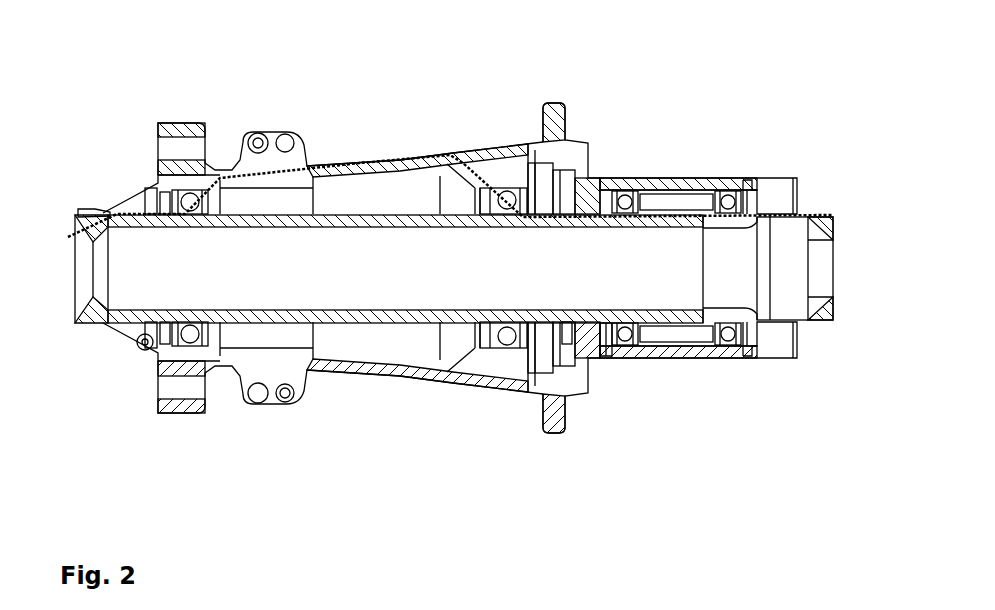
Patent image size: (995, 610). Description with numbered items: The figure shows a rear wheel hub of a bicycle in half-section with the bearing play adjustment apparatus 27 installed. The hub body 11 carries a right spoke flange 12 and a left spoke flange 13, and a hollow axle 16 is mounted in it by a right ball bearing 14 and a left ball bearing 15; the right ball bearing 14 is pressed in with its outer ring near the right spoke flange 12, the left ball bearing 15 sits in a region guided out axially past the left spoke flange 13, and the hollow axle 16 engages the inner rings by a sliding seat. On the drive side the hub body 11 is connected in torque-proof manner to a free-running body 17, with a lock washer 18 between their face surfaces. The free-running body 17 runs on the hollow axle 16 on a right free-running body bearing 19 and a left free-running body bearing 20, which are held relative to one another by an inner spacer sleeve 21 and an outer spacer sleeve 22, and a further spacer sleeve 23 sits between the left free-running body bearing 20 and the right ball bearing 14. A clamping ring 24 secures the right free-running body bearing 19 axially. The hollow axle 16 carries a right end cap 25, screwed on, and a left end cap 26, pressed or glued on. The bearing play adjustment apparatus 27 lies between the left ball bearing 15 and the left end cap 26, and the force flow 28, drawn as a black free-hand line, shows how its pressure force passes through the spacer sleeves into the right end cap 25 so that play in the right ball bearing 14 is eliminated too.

The hub body 11 is at (503, 152).
The right spoke flange 12 is at (553, 118).
The left spoke flange 13 is at (273, 133).
The right ball bearing 14 is at (504, 345).
The left ball bearing 15 is at (193, 345).
The hollow axle 16 is at (380, 318).
The free-running body 17 is at (695, 180).
The lock washer 18 is at (568, 330).
The right free-running body bearing 19 is at (725, 195).
The left free-running body bearing 20 is at (627, 190).
The inner spacer sleeve 21 is at (688, 320).
The outer spacer sleeve 22 is at (706, 338).
The spacer sleeve 23 is at (603, 345).
The clamping ring 24 is at (743, 333).
The right end cap 25 is at (826, 218).
The left end cap 26 is at (108, 212).
The bearing play adjustment apparatus 27 is at (140, 190).
The force flow 28 is at (400, 162).